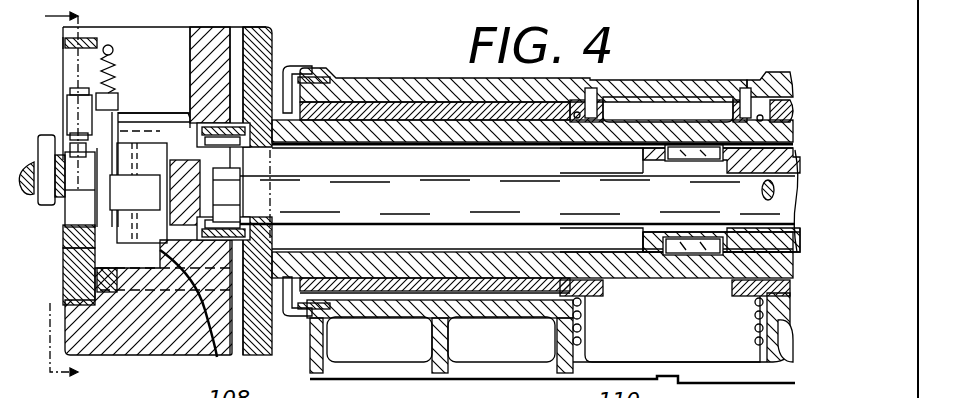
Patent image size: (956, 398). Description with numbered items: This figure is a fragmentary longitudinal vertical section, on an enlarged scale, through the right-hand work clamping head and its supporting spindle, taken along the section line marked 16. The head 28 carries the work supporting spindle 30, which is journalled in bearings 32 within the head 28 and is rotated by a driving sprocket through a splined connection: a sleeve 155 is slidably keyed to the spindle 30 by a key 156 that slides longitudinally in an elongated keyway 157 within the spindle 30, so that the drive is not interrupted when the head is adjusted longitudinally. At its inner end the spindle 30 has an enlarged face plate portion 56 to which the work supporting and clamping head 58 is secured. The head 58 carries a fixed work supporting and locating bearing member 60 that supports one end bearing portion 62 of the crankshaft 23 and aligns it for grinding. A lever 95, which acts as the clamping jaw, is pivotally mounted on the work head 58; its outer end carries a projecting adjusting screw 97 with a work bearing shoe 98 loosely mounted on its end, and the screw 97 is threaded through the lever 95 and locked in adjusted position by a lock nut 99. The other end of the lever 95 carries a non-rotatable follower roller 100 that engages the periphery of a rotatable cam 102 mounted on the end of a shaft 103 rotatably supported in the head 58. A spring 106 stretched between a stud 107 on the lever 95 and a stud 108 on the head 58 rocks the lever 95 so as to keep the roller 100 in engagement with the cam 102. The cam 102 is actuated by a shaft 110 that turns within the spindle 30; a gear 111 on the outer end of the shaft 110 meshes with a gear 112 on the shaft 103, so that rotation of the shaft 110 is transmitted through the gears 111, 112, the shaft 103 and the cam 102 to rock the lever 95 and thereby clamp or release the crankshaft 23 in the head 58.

The section line 16 is at (47, 204).
The crankshaft 23 is at (45, 215).
The head 28 is at (425, 92).
The work supporting spindle 30 is at (640, 130).
The bearings 32 is at (383, 100).
The enlarged face plate portion 56 is at (262, 52).
The work supporting and clamping head 58 is at (153, 335).
The work supporting and locating bearing member 60 is at (92, 247).
The end bearing portion 62 is at (65, 280).
The lever 95 is at (67, 115).
The adjusting screw 97 is at (74, 88).
The work bearing shoe 98 is at (70, 146).
The lock nut 99 is at (68, 98).
The follower roller 100 is at (135, 130).
The cam 102 is at (90, 226).
The shaft 103 is at (122, 185).
The spring 106 is at (113, 75).
The stud 107 is at (118, 103).
The stud 108 is at (114, 50).
The shaft 110 is at (458, 184).
The gear 111 is at (242, 186).
The gear 112 is at (242, 207).
The sleeve 155 is at (650, 252).
The key 156 is at (697, 147).
The keyway 157 is at (575, 250).